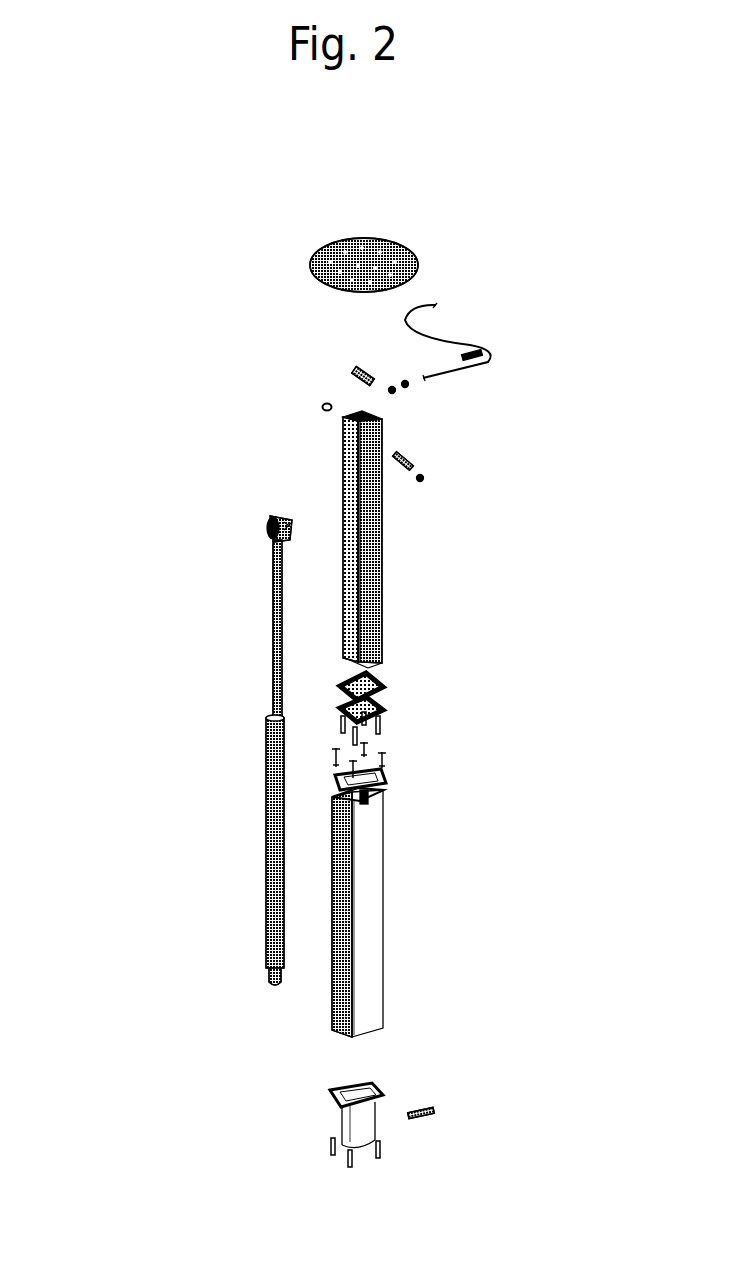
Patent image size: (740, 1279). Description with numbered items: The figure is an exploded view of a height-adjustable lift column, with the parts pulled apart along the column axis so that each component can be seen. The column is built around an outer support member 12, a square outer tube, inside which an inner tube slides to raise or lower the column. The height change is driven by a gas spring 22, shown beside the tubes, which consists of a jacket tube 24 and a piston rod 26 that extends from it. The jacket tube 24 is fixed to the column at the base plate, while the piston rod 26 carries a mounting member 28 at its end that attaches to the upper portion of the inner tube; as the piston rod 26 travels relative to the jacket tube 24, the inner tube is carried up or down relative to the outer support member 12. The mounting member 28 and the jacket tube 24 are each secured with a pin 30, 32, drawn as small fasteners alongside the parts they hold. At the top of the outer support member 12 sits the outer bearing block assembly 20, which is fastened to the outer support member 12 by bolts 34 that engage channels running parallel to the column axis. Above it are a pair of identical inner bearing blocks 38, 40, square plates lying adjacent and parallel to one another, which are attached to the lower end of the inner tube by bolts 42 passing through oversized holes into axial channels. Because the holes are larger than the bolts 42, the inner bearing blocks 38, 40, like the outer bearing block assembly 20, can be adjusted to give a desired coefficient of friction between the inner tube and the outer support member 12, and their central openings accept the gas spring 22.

The outer support member 12 is at (372, 936).
The outer bearing block assembly 20 is at (380, 795).
The gas spring 22 is at (262, 796).
The jacket tube 24 is at (262, 866).
The piston rod 26 is at (265, 614).
The mounting member 28 is at (266, 505).
The pin 30 is at (410, 458).
The pin 32 is at (435, 1111).
The bolts 34 is at (383, 773).
The inner bearing block 38 is at (380, 678).
The inner bearing block 40 is at (380, 712).
The bolts 42 is at (345, 725).